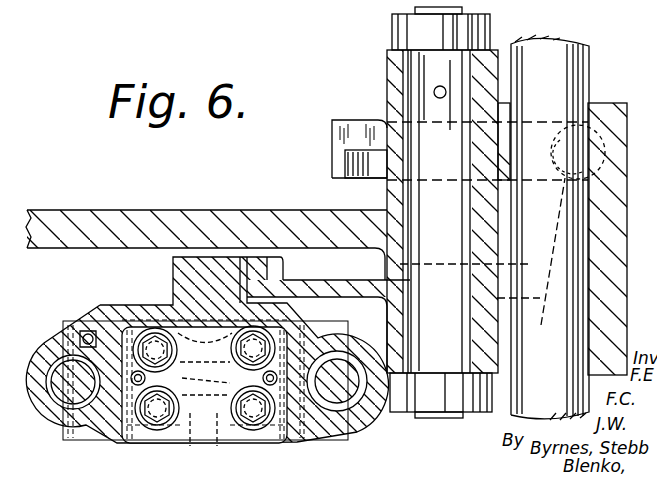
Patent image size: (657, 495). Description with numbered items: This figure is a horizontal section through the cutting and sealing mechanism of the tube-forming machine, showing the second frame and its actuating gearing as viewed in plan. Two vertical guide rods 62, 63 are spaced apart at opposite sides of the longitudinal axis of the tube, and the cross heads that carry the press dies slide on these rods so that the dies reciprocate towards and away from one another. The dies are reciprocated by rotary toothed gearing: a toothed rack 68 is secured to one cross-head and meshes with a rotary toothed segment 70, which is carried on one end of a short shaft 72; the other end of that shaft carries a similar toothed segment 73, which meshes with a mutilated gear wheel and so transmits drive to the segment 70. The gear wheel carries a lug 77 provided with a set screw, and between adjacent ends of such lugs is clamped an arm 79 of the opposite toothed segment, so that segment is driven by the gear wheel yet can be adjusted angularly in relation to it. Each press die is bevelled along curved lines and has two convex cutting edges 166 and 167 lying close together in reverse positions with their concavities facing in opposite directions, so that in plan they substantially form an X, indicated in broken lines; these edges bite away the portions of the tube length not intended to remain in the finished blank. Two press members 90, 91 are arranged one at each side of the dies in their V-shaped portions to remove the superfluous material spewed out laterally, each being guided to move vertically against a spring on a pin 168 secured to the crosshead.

The vertical guide rod 62 is at (355, 398).
The vertical guide rod 63 is at (55, 364).
The toothed rack 68 is at (242, 246).
The toothed segment 70 is at (303, 286).
The short shaft 72 is at (433, 213).
The toothed segment 73 is at (360, 135).
The lug 77 is at (542, 128).
The arm 79 is at (565, 241).
The press member 90 is at (192, 443).
The press member 91 is at (234, 443).
The cutting edge 166 is at (207, 358).
The cutting edge 167 is at (192, 388).
The pin 168 is at (112, 352).